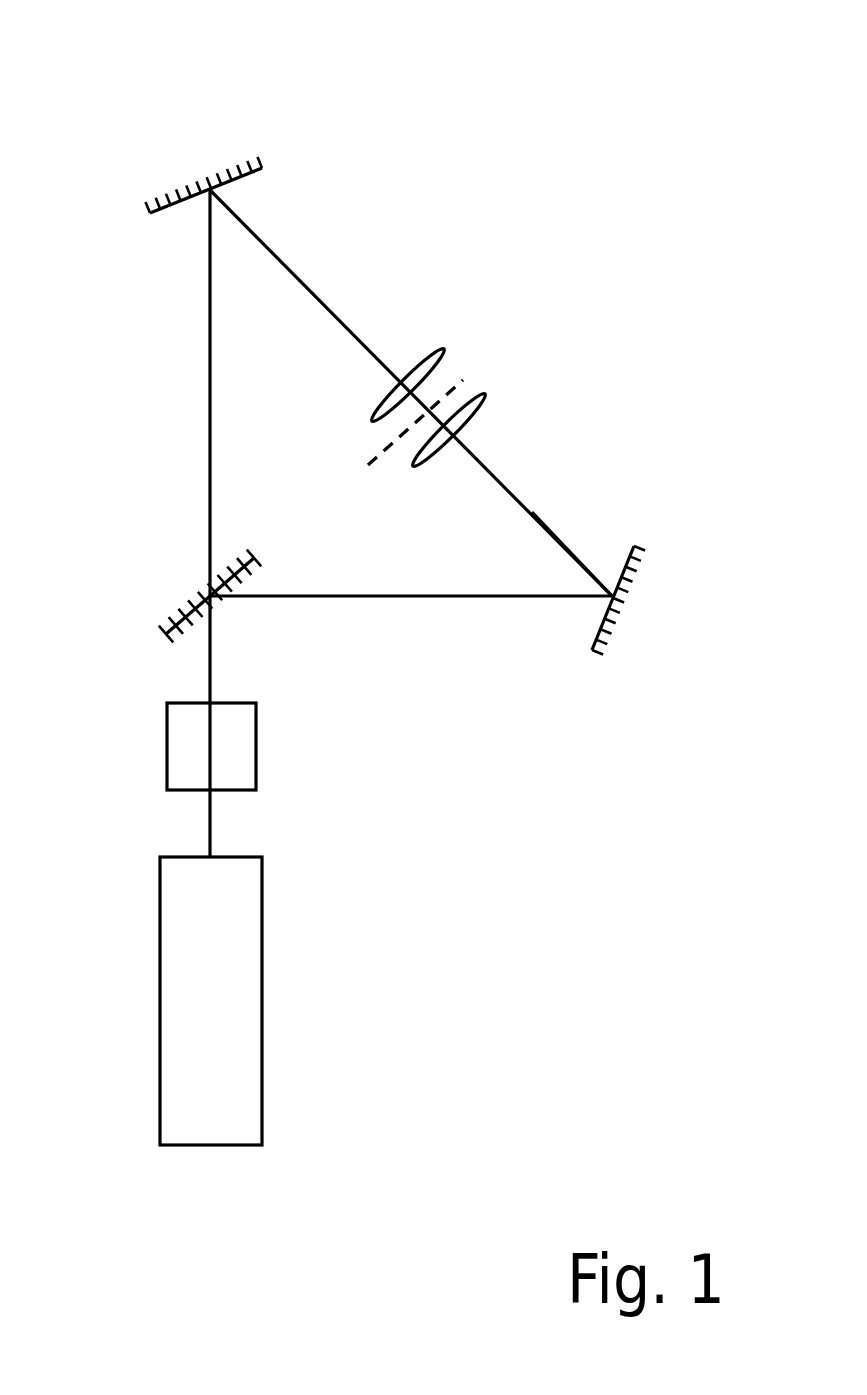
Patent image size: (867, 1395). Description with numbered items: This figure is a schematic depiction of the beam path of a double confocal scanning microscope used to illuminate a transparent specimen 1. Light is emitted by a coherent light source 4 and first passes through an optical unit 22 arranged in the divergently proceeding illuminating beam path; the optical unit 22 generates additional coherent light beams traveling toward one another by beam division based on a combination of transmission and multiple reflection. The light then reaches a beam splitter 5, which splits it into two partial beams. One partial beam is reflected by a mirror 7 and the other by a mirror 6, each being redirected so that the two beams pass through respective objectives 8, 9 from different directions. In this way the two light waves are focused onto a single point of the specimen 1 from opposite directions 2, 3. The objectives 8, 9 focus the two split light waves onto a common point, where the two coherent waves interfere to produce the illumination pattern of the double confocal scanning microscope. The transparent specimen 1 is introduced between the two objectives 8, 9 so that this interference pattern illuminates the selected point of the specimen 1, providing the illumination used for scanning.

The transparent specimen 1 is at (433, 412).
The first direction 2 is at (293, 272).
The second direction 3 is at (532, 511).
The coherent light source 4 is at (262, 1001).
The beam splitter 5 is at (172, 618).
The mirror 6 is at (617, 615).
The mirror 7 is at (237, 165).
The objective 8 is at (404, 372).
The objective 9 is at (457, 432).
The optical unit 22 is at (256, 746).